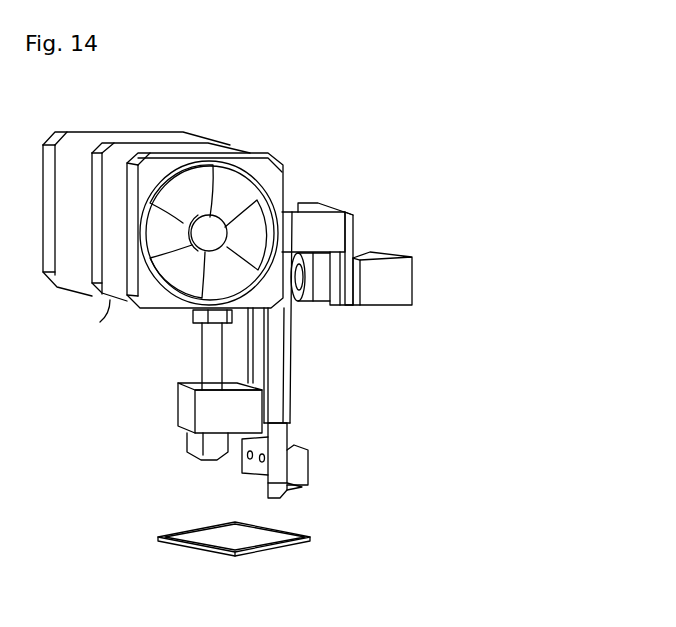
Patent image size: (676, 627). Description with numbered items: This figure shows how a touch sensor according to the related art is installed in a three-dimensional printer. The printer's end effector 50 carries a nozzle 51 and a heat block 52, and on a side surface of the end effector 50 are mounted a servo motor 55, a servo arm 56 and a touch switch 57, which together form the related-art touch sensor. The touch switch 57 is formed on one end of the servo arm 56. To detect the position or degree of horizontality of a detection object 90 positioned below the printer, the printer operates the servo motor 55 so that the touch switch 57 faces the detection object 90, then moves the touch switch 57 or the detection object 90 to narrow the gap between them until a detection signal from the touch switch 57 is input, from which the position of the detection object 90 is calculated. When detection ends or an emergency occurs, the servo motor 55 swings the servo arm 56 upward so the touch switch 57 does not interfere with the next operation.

The end effector 50 is at (110, 300).
The nozzle 51 is at (203, 453).
The heat block 52 is at (192, 409).
The servo motor 55 is at (378, 297).
The servo arm 56 is at (275, 388).
The touch switch 57 is at (300, 467).
The detection object 90 is at (288, 548).